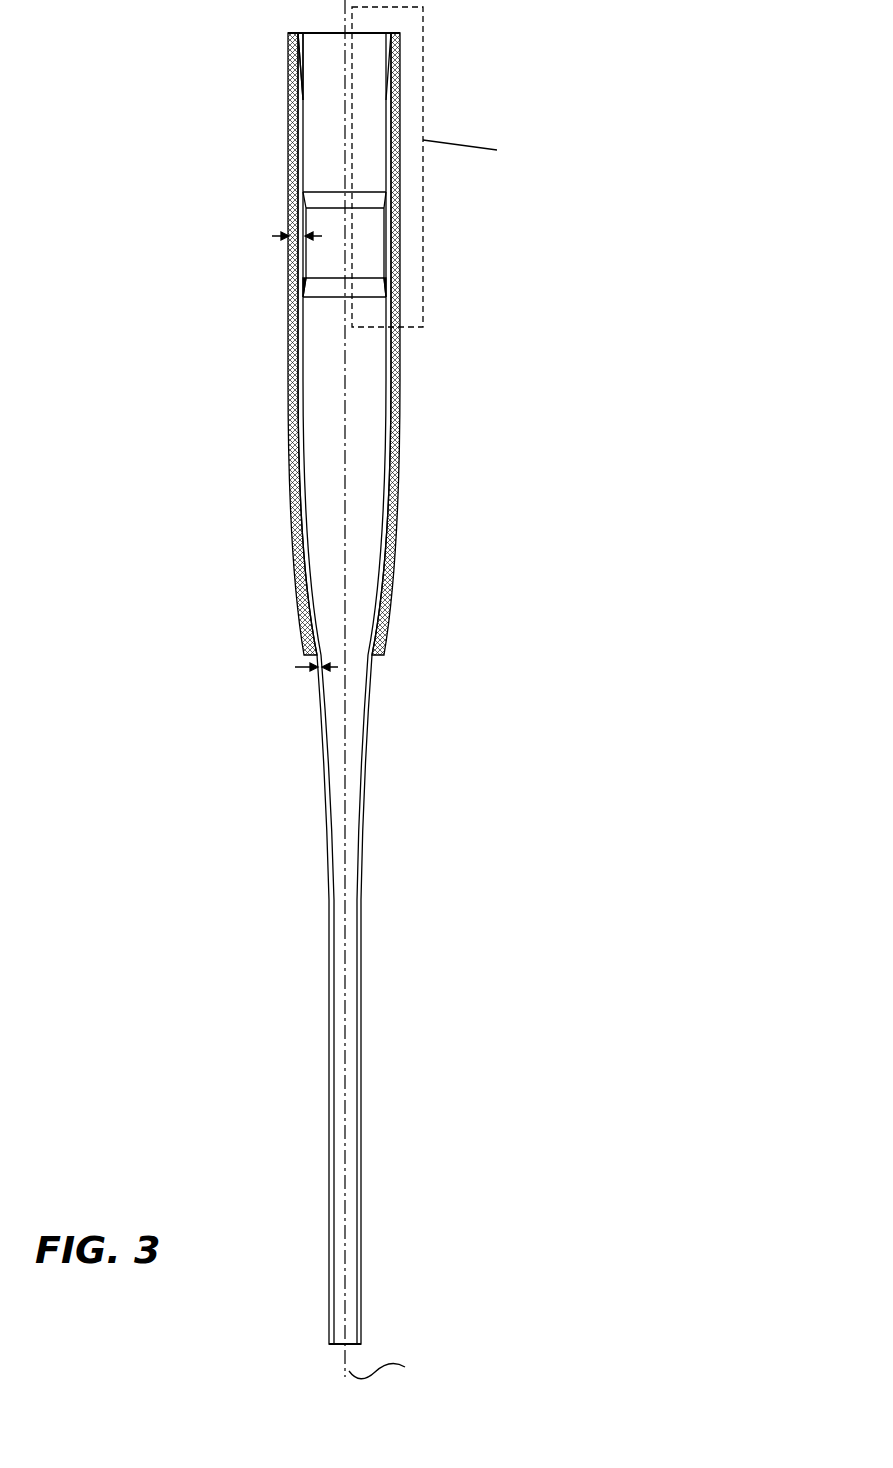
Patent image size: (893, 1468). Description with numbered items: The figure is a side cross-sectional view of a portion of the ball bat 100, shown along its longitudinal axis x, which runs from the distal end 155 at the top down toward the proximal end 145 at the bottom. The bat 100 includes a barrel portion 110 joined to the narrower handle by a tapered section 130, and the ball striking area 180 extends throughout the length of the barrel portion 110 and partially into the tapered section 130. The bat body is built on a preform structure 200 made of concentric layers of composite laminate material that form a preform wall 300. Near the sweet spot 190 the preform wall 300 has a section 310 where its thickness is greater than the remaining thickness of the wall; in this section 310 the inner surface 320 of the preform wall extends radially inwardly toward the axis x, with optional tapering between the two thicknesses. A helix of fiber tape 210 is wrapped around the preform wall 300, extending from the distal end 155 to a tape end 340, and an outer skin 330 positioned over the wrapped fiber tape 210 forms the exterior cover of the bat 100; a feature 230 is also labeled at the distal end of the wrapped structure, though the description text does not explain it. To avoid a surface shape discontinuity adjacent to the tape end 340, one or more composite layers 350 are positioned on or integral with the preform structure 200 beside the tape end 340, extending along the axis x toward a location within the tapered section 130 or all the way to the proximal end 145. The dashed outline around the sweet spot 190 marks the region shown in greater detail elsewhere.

The ball bat 100 is at (430, 689).
The barrel portion 110 is at (230, 35).
The tapered section 130 is at (256, 435).
The proximal end 145 is at (332, 1357).
The distal end 155 is at (308, 24).
The ball striking area 180 is at (165, 35).
The sweet spot 190 is at (412, 226).
The preform structure 200 is at (363, 783).
The fiber tape 210 is at (399, 95).
The tapered wall edge 230 is at (398, 40).
The preform wall 300 is at (288, 92).
The section 310 is at (284, 192).
The inner surface 320 is at (303, 343).
The outer skin 330 is at (397, 468).
The tape end 340 is at (400, 287).
The composite layers 350 is at (385, 592).